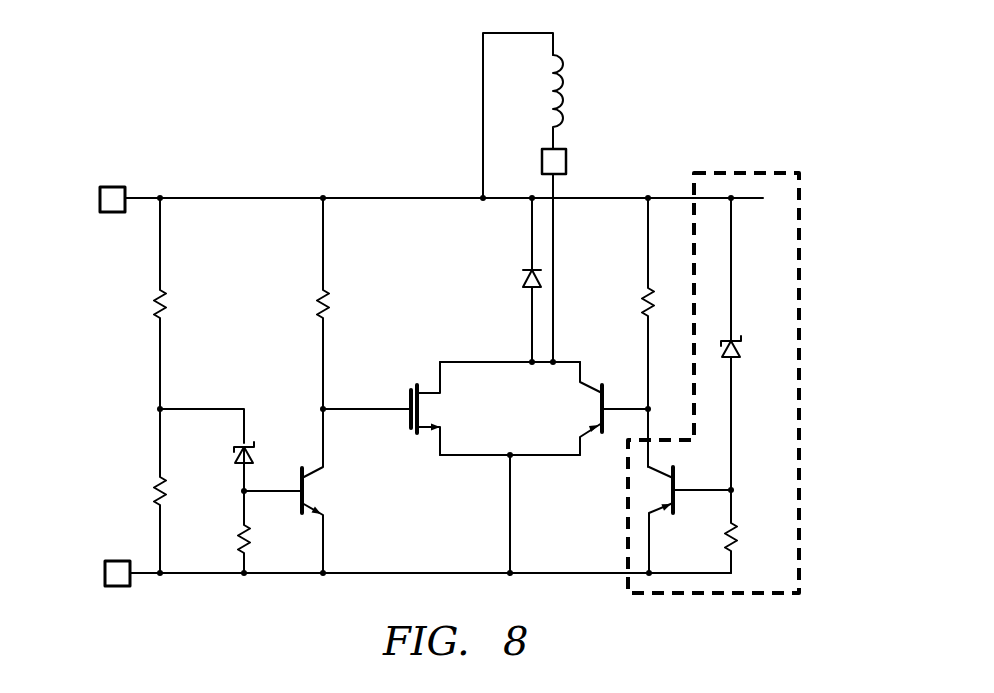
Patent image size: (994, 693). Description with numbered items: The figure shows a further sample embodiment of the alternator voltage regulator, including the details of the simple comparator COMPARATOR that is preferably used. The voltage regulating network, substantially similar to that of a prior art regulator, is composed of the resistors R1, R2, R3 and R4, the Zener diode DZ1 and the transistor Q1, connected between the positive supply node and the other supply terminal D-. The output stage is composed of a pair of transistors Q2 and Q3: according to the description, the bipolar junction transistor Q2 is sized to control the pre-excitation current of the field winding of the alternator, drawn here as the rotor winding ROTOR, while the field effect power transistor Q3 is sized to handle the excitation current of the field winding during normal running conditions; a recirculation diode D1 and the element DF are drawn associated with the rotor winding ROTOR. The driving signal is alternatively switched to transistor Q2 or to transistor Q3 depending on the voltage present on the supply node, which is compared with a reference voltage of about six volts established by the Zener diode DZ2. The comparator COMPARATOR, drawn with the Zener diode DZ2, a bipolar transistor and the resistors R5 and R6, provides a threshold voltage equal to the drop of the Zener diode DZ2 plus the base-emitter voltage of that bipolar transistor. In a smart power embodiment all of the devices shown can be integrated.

The resistor R1 is at (145, 303).
The resistor R2 is at (147, 491).
The resistor R3 is at (230, 532).
The resistor R4 is at (308, 303).
The resistor R5 is at (633, 332).
The resistor R6 is at (718, 531).
The transistor Q1 is at (295, 491).
The bipolar junction transistor Q2 is at (389, 408).
The field effect (MOS) power transistor Q3 is at (602, 408).
The Zener diode DZ1 is at (222, 466).
The Zener diode DZ2 is at (756, 344).
The recirculation diode D1 is at (497, 270).
The field diode / sensing element DF is at (538, 255).
The negative supply terminal D- is at (400, 569).
The rotor winding ROTOR is at (570, 82).
The comparator COMPARATOR is at (762, 145).